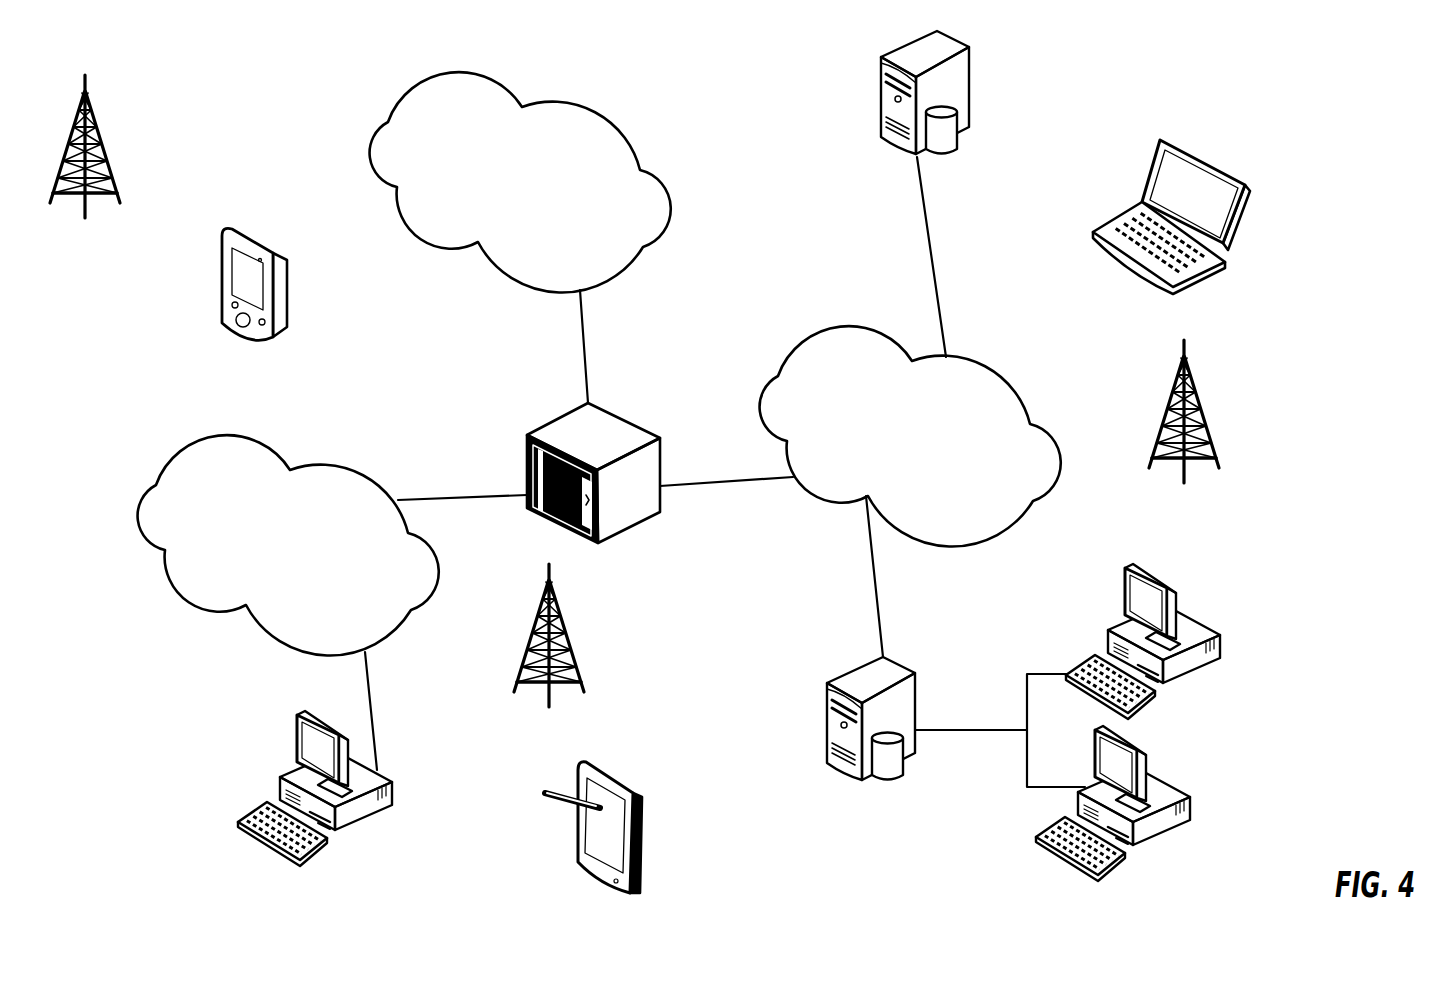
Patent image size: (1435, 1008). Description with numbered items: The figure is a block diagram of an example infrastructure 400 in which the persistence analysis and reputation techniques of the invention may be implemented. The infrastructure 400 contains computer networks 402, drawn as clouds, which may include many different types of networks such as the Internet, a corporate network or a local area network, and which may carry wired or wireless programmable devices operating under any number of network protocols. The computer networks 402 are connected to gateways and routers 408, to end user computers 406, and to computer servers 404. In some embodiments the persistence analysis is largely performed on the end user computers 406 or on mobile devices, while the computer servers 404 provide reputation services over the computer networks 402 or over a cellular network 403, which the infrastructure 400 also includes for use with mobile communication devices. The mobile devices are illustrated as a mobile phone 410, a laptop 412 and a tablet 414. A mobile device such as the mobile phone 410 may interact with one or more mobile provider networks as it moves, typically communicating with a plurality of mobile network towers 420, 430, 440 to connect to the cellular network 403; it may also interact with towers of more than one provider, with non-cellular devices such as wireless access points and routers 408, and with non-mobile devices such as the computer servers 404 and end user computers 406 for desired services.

The infrastructure 400 is at (1078, 122).
The computer networks 402 is at (275, 452).
The cellular network 403 is at (577, 110).
The computer servers 404 is at (884, 80).
The end user computers 406 is at (390, 780).
The gateways and routers 408 is at (618, 418).
The mobile phone 410 is at (257, 235).
The laptop 412 is at (1217, 167).
The tablet 414 is at (623, 777).
The mobile network tower 420 is at (549, 652).
The mobile network tower 430 is at (1184, 428).
The mobile network tower 440 is at (85, 163).